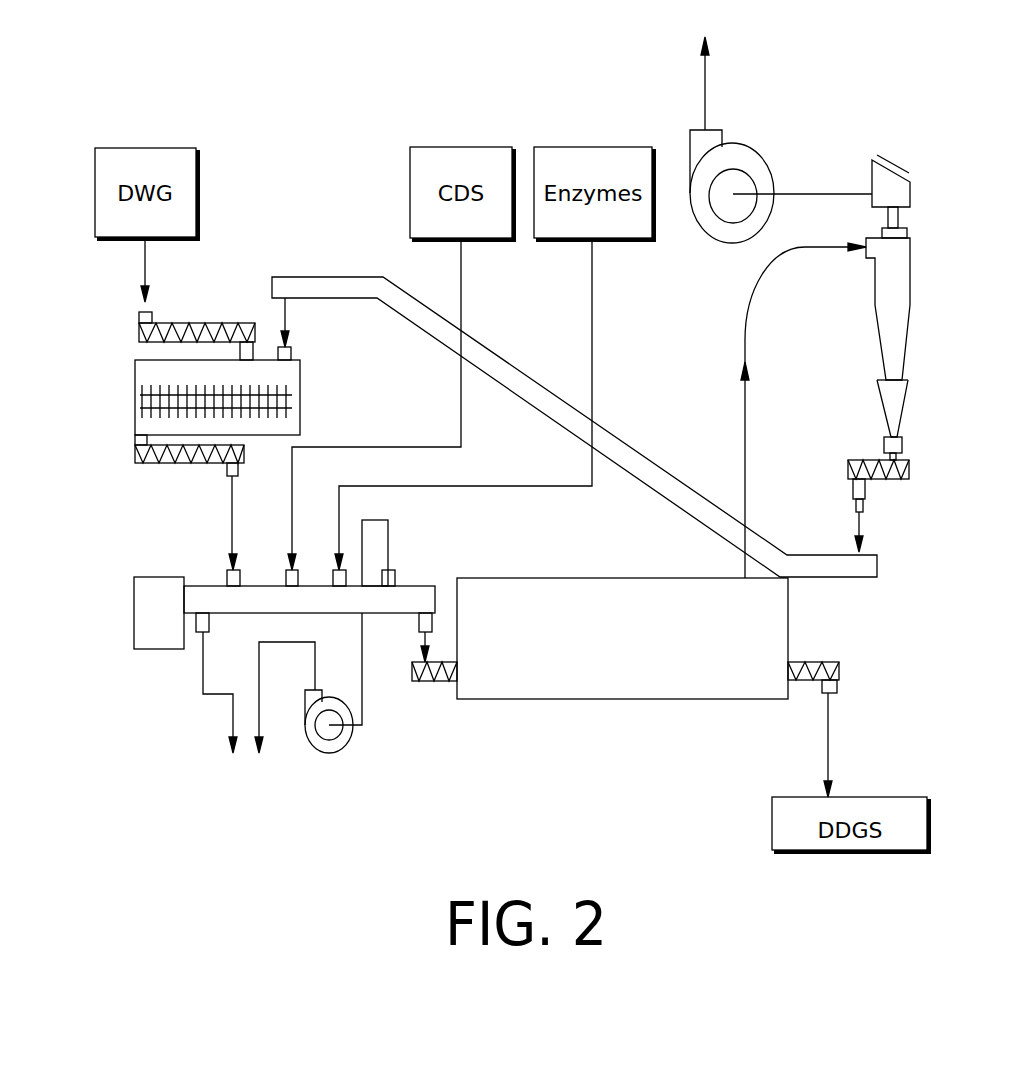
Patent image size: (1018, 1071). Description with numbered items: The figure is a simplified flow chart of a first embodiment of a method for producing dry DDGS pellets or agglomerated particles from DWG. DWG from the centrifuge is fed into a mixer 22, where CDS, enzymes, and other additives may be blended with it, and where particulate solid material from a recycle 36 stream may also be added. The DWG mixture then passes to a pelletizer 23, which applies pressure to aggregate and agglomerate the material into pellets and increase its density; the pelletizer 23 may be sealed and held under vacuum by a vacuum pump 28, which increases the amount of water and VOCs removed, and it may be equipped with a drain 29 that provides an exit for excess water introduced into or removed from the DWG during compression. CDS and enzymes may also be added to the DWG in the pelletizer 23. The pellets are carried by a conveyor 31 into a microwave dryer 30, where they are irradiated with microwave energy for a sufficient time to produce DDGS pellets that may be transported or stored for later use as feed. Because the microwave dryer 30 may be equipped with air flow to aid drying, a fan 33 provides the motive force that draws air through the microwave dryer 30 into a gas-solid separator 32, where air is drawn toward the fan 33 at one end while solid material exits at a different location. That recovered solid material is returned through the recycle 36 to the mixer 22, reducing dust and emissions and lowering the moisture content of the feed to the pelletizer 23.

The mixer 22 is at (135, 373).
The pelletizer 23 is at (134, 603).
The vacuum pump 28 is at (328, 753).
The drain 29 is at (259, 711).
The microwave dryer 30 is at (627, 658).
The conveyor 31 is at (430, 681).
The gas-solid separator 32 is at (912, 276).
The fan 33 is at (748, 146).
The recycle 36 is at (612, 432).